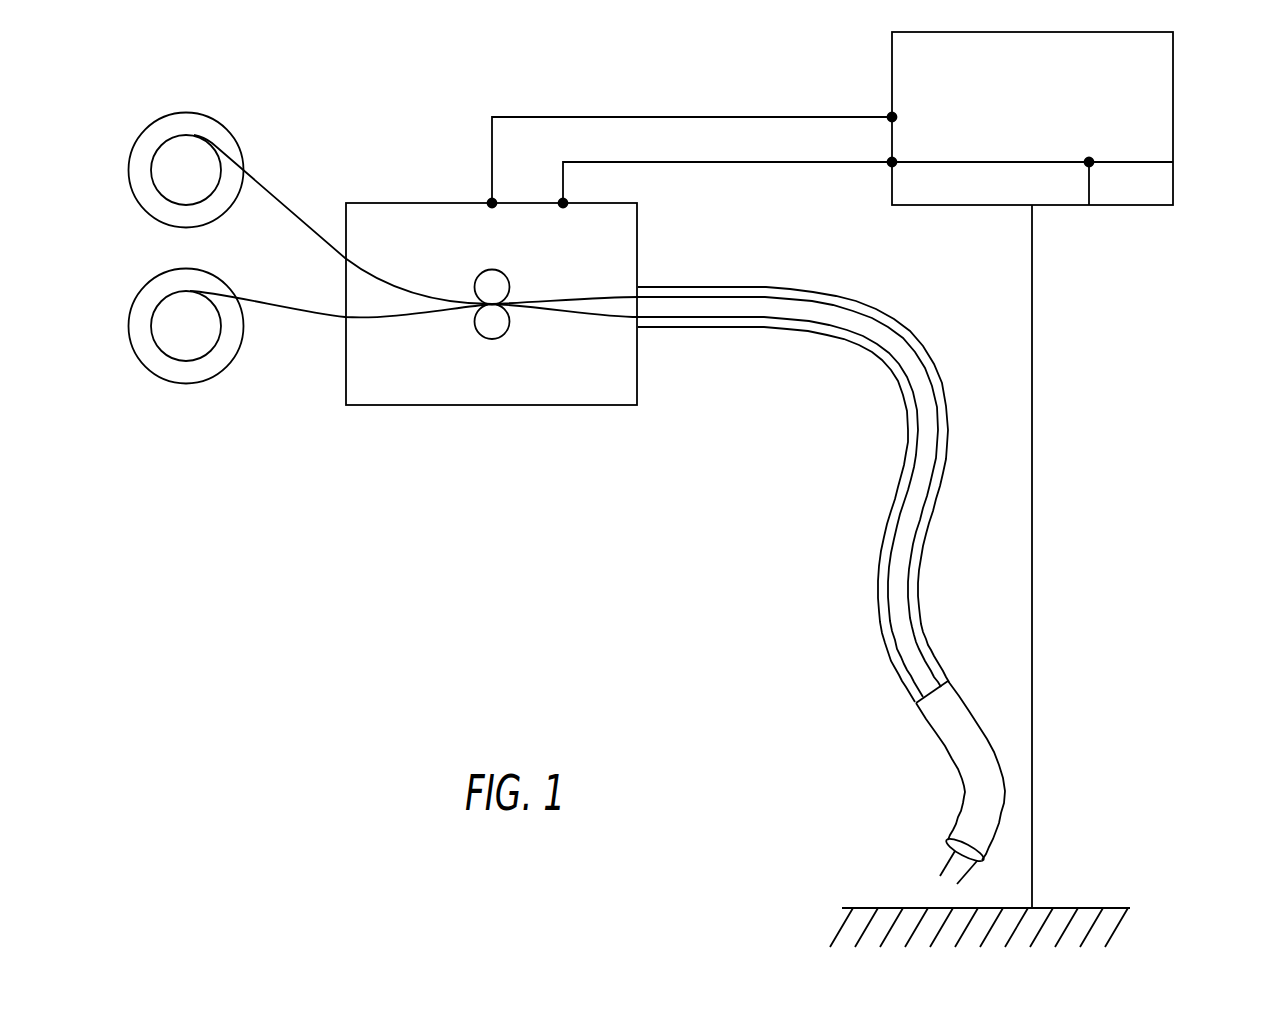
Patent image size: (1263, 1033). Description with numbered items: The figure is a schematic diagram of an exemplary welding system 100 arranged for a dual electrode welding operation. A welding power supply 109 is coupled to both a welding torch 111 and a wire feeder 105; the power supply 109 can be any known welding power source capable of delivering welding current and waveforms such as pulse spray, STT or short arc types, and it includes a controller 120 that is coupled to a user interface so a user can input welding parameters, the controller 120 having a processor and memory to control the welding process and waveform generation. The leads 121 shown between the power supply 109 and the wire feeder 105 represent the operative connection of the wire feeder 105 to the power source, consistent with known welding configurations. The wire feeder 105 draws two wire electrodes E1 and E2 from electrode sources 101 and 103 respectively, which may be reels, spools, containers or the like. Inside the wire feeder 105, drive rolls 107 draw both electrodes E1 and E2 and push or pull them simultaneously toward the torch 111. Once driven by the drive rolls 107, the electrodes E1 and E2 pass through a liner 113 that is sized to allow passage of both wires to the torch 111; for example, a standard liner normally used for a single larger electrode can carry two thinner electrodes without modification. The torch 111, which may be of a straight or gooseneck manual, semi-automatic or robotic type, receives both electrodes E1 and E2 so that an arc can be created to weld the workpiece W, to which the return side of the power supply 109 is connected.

The welding system 100 is at (440, 88).
The electrode source 101 is at (193, 113).
The electrode source 103 is at (184, 385).
The wire feeder 105 is at (605, 405).
The drive rolls 107 is at (492, 339).
The power supply 109 is at (1173, 100).
The welding torch 111 is at (952, 760).
The liner 113 is at (905, 400).
The controller 120 is at (1130, 187).
The positive terminal leads 121 is at (892, 117).
The wire electrode E1 is at (267, 190).
The wire electrode E2 is at (275, 316).
The workpiece W is at (1090, 908).